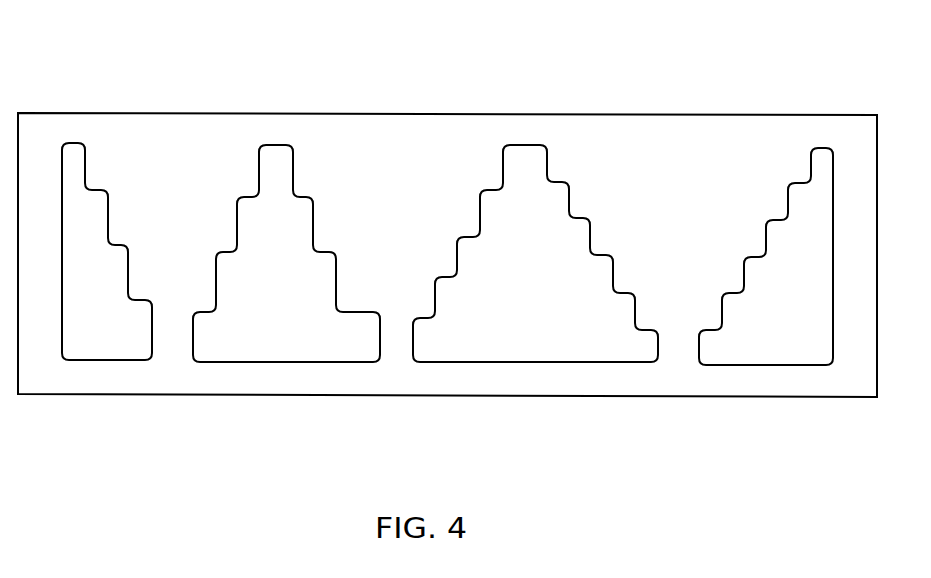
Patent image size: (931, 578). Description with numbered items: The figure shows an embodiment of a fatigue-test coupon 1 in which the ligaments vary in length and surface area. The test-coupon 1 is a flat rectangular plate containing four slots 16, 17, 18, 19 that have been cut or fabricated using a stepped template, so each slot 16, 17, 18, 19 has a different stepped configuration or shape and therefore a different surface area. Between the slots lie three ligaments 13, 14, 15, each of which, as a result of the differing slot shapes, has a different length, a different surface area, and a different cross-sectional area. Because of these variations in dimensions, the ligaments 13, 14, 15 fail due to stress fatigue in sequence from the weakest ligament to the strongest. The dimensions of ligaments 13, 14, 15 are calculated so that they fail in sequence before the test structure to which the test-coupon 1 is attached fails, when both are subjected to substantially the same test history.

The test-coupon 1 is at (579, 109).
The ligament 13 is at (140, 170).
The ligament 14 is at (397, 162).
The ligament 15 is at (722, 182).
The slot 16 is at (106, 338).
The slot 17 is at (277, 337).
The slot 18 is at (525, 340).
The slot 19 is at (771, 333).